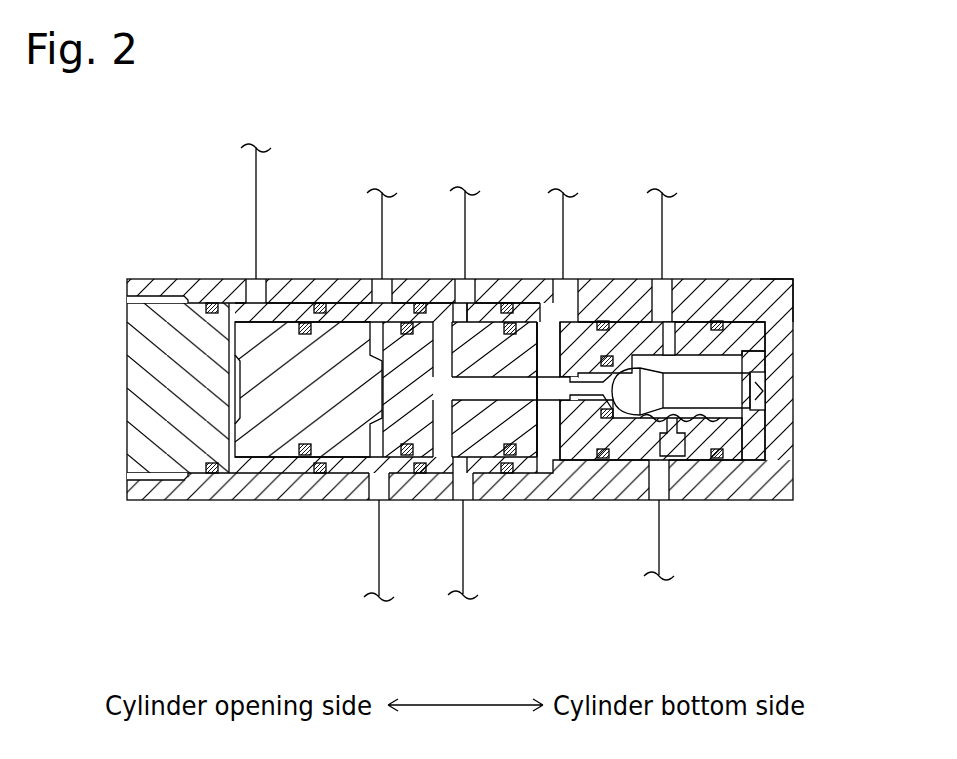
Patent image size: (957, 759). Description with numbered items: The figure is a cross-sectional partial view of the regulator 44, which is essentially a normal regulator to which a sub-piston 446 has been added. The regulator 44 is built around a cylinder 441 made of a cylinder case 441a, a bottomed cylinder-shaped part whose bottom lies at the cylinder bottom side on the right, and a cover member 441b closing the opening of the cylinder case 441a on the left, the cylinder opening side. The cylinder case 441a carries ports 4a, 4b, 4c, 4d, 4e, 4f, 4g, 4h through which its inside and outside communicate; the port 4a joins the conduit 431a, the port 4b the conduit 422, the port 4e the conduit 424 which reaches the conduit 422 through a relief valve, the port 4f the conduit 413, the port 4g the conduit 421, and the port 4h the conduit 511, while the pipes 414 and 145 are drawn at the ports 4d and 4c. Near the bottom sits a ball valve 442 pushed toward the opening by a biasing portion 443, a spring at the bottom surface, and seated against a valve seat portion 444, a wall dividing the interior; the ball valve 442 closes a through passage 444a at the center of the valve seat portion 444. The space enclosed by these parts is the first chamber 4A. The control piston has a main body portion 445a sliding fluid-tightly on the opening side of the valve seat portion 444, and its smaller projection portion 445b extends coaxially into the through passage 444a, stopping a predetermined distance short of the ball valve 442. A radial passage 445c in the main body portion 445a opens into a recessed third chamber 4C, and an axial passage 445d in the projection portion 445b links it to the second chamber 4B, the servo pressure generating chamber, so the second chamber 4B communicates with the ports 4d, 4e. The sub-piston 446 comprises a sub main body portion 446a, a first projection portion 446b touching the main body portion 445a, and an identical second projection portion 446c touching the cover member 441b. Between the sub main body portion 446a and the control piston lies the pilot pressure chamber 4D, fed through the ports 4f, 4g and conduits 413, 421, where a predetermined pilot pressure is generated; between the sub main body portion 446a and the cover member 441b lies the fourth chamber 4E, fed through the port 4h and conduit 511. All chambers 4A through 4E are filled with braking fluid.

The regulator 44 is at (835, 442).
The cylinder 441 is at (811, 308).
The cylinder case 441a is at (758, 283).
The cover member 441b is at (140, 333).
The ball valve 442 is at (660, 458).
The biasing portion 443 is at (757, 440).
The valve seat portion 444 is at (605, 322).
The through passage 444a is at (608, 460).
The main body portion 445a is at (405, 462).
The projection portion 445b is at (568, 470).
The passage 445c is at (440, 440).
The passage 445d is at (510, 458).
The sub-piston 446 is at (232, 648).
The sub main body portion 446a is at (272, 405).
The first projection portion 446b is at (308, 433).
The second projection portion 446c is at (232, 400).
The conduit 511 is at (258, 182).
The conduit 413 is at (384, 213).
The pipe 414 is at (470, 215).
The pipe 145 is at (568, 213).
The conduit 431a is at (667, 262).
The conduit 421 is at (378, 580).
The conduit 424 is at (460, 578).
The conduit 422 is at (657, 548).
The first chamber 4A is at (640, 362).
The second chamber 4B is at (568, 330).
The third chamber 4C is at (482, 300).
The pilot pressure chamber 4D is at (312, 320).
The fourth chamber 4E is at (205, 303).
The port 4a is at (670, 282).
The port 4b is at (668, 505).
The port 4c is at (553, 300).
The port 4d is at (455, 300).
The port 4e is at (465, 500).
The port 4f is at (372, 300).
The port 4g is at (369, 500).
The port 4h is at (250, 300).